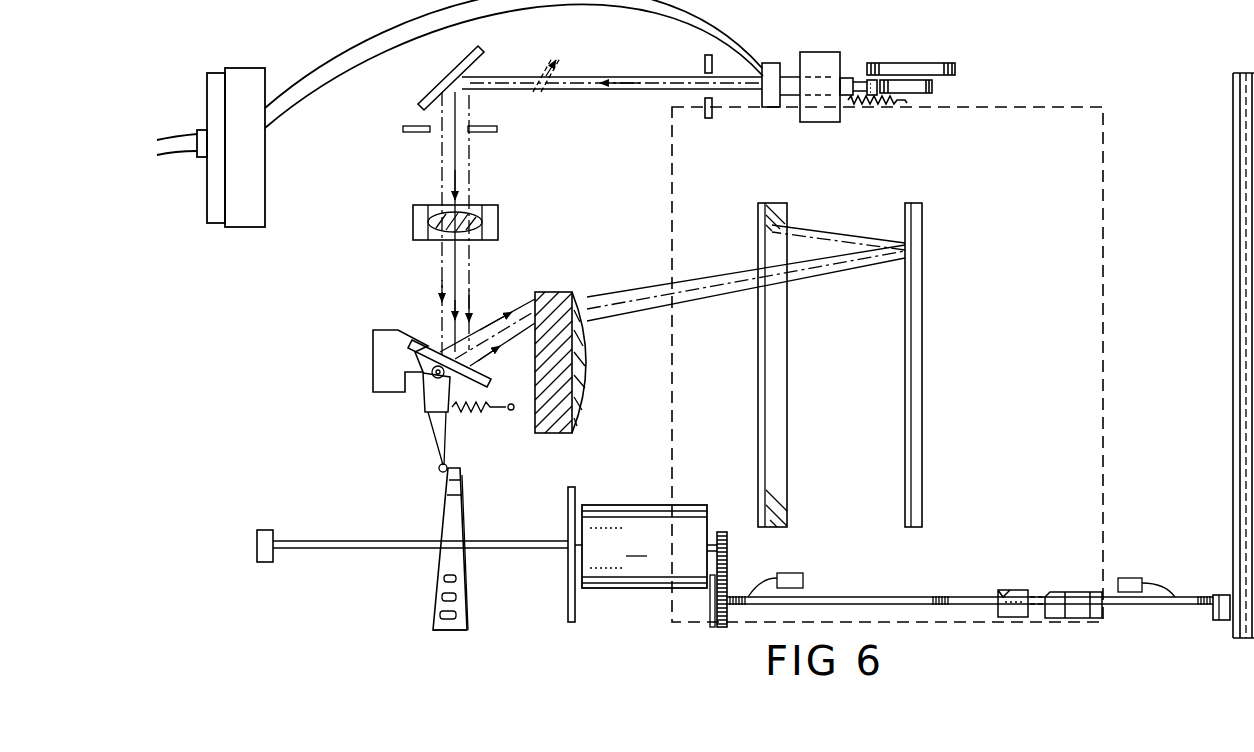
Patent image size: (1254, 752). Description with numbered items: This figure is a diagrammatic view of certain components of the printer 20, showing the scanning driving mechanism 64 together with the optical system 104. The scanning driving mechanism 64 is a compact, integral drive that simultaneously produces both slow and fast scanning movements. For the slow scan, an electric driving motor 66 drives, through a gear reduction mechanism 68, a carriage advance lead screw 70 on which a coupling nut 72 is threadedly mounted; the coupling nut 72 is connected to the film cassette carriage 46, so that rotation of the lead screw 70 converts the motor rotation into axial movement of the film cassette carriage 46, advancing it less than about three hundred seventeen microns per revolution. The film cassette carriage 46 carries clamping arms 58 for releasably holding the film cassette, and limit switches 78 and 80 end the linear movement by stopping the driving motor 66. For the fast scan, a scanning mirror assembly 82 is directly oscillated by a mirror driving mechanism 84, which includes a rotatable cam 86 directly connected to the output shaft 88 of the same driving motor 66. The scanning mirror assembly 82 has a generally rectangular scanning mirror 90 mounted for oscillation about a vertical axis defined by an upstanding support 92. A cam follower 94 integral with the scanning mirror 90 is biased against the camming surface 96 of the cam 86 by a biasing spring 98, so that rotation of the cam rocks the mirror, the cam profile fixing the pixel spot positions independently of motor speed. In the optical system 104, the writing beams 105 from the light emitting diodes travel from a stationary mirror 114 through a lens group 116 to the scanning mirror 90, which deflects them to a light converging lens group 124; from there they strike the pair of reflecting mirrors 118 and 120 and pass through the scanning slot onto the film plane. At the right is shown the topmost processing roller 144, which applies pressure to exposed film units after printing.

The printer 20 is at (1092, 95).
The film cassette carriage 46 is at (1012, 130).
The clamping arms 58 is at (1008, 590).
The scanning driving mechanism 64 is at (743, 563).
The electric driving motor 66 is at (614, 505).
The gear reduction mechanism 68 is at (700, 629).
The carriage advance lead screw 70 is at (900, 596).
The coupling nut 72 is at (1082, 620).
The limit switch 78 is at (803, 580).
The limit switch 80 is at (1126, 578).
The scanning mirror assembly 82 is at (415, 373).
The mirror driving mechanism 84 is at (422, 554).
The rotatable cam 86 is at (456, 520).
The output shaft 88 is at (531, 541).
The scanning mirror 90 is at (418, 346).
The upstanding support 92 is at (370, 331).
The cam follower 94 is at (438, 470).
The camming surface 96 is at (446, 514).
The biasing spring 98 is at (480, 420).
The optical system 104 is at (408, 120).
The writing beams 105 is at (672, 204).
The stationary mirror 114 is at (481, 52).
The lens group 116 is at (500, 216).
The reflecting mirror 118 is at (913, 204).
The reflecting mirror 120 is at (759, 204).
The light converging lens group 124 is at (543, 293).
The processing roller 144 is at (1232, 326).